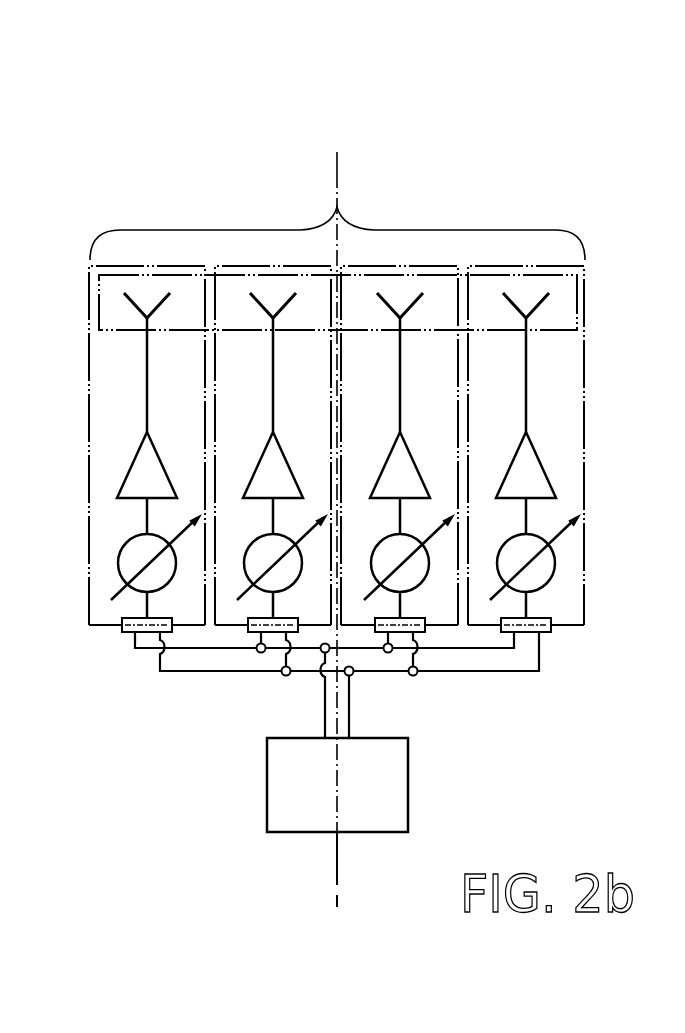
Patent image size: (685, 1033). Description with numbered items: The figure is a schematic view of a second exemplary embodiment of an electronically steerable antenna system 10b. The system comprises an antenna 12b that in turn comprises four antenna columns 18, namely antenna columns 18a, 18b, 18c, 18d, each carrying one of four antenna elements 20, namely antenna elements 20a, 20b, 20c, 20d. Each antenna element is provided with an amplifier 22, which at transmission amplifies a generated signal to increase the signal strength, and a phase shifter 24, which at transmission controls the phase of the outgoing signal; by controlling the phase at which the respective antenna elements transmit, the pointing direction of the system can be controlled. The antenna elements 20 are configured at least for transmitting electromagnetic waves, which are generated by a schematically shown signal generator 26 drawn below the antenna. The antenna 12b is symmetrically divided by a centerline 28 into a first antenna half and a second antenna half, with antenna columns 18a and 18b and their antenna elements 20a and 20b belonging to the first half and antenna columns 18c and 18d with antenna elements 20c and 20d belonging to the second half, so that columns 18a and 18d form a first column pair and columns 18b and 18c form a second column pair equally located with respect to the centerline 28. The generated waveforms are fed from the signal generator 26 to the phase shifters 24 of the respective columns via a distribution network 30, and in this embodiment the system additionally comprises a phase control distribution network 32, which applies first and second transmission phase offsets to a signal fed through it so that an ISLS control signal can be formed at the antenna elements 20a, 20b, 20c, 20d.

The electronically steerable antenna system 10b is at (322, 72).
The antenna 12b is at (115, 115).
The antenna columns 18 is at (326, 228).
The antenna column 18a is at (132, 266).
The antenna column 18b is at (257, 266).
The antenna column 18c is at (421, 266).
The antenna column 18d is at (546, 266).
The antenna elements 20 is at (577, 300).
The antenna element 20a is at (147, 320).
The antenna element 20b is at (273, 320).
The antenna element 20c is at (400, 320).
The antenna element 20d is at (526, 320).
The amplifier 22 is at (543, 462).
The phase shifter 24 is at (555, 563).
The signal generator 26 is at (408, 785).
The centerline 28 is at (338, 173).
The distribution network 30 is at (456, 648).
The phase control distribution network 32 is at (541, 650).